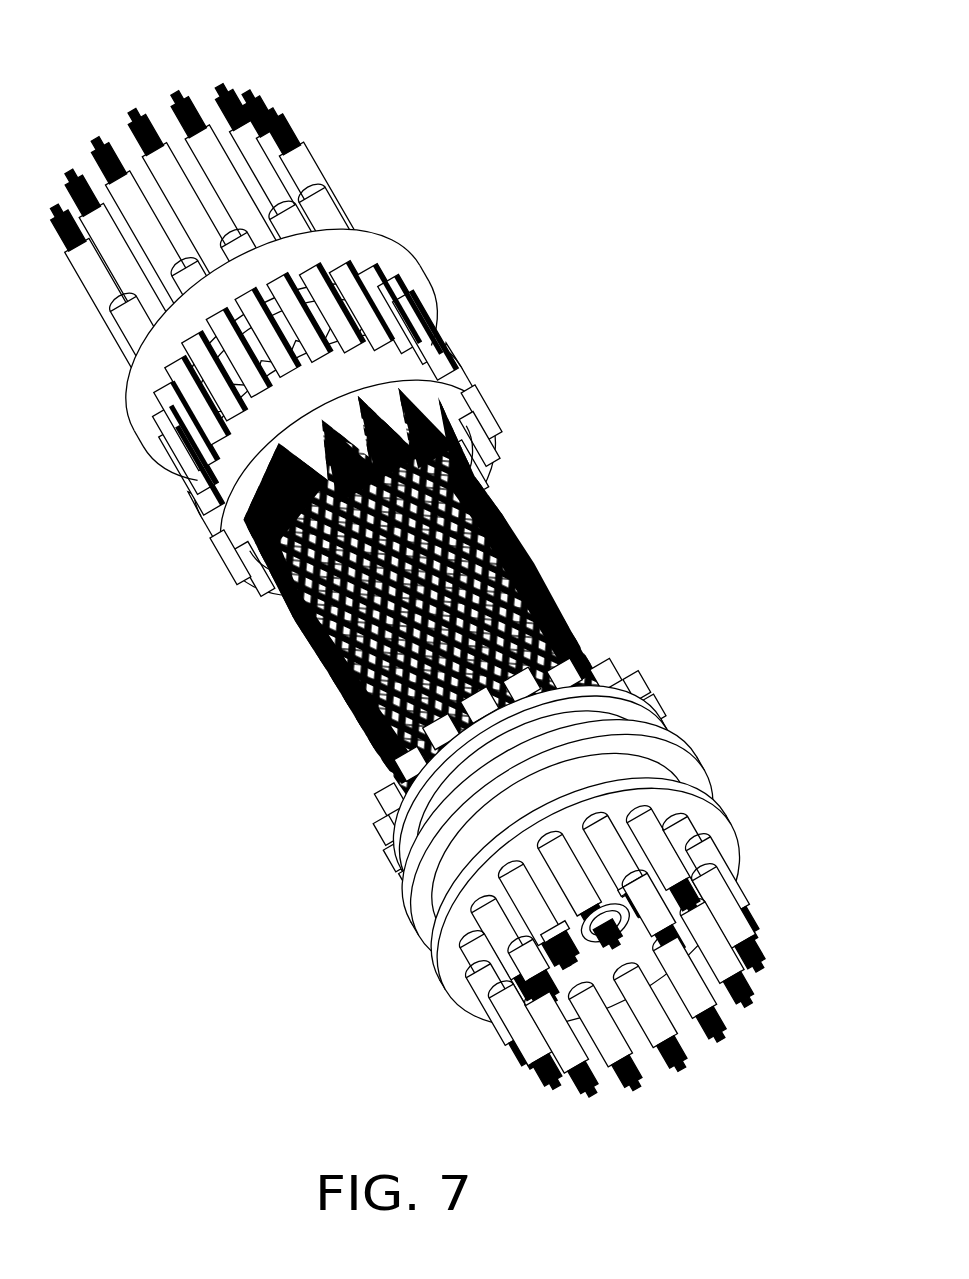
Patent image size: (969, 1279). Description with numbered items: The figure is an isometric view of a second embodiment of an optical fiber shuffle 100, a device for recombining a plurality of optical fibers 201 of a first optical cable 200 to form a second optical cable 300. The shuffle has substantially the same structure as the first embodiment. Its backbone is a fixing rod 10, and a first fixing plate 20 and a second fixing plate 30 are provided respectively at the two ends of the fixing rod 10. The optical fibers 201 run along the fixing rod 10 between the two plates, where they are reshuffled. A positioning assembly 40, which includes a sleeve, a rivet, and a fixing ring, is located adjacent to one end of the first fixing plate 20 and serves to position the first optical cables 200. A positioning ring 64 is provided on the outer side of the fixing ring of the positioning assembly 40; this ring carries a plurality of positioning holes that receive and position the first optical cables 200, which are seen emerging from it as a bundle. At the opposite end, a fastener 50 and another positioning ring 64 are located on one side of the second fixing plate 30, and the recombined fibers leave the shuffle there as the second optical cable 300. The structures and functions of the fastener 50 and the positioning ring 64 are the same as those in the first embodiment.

The optical fiber shuffle 100 is at (398, 68).
The second optical cable 300 is at (300, 172).
The positioning ring 64 is at (382, 247).
The fastener 50 is at (393, 318).
The second fixing plate 30 is at (200, 523).
The optical fibers 201 is at (503, 520).
The fixing rod 10 is at (295, 622).
The first fixing plate 20 is at (375, 783).
The positioning assembly 40 is at (700, 768).
The first optical cable 200 is at (735, 895).